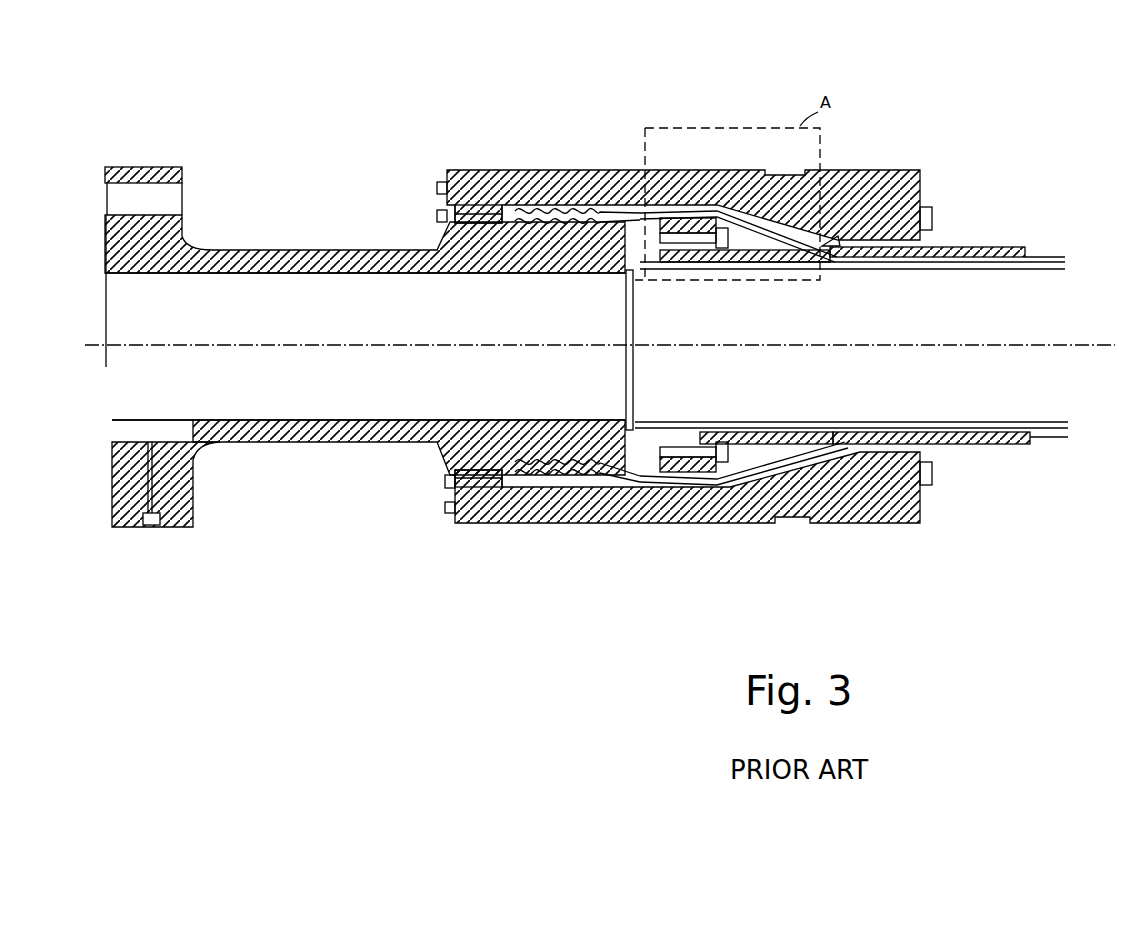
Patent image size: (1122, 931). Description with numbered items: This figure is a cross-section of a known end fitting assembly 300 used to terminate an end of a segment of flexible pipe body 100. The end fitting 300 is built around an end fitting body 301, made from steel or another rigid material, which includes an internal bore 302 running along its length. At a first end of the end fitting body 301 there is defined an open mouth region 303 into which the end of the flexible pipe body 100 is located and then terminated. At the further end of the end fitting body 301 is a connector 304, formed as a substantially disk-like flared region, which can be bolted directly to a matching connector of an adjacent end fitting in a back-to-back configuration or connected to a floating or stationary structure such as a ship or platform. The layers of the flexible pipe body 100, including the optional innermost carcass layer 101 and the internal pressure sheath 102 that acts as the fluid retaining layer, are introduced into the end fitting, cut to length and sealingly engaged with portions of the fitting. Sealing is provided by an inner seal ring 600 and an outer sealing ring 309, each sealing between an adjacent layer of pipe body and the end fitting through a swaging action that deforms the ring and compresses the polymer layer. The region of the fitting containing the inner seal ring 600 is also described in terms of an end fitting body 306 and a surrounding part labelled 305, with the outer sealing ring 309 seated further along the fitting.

The end fitting assembly 300 is at (427, 73).
The end fitting body 301 is at (271, 249).
The internal bore 302 is at (302, 339).
The open mouth region 303 is at (586, 311).
The connector 304 is at (185, 170).
The coupling nut 305 is at (580, 170).
The end fitting body 306 is at (577, 273).
The outer sealing ring 309 is at (893, 243).
The inner seal ring 600 is at (678, 268).
The carcass layer 101 is at (778, 270).
The internal pressure sheath 102 is at (655, 428).
The flexible pipe body 100 is at (1078, 450).